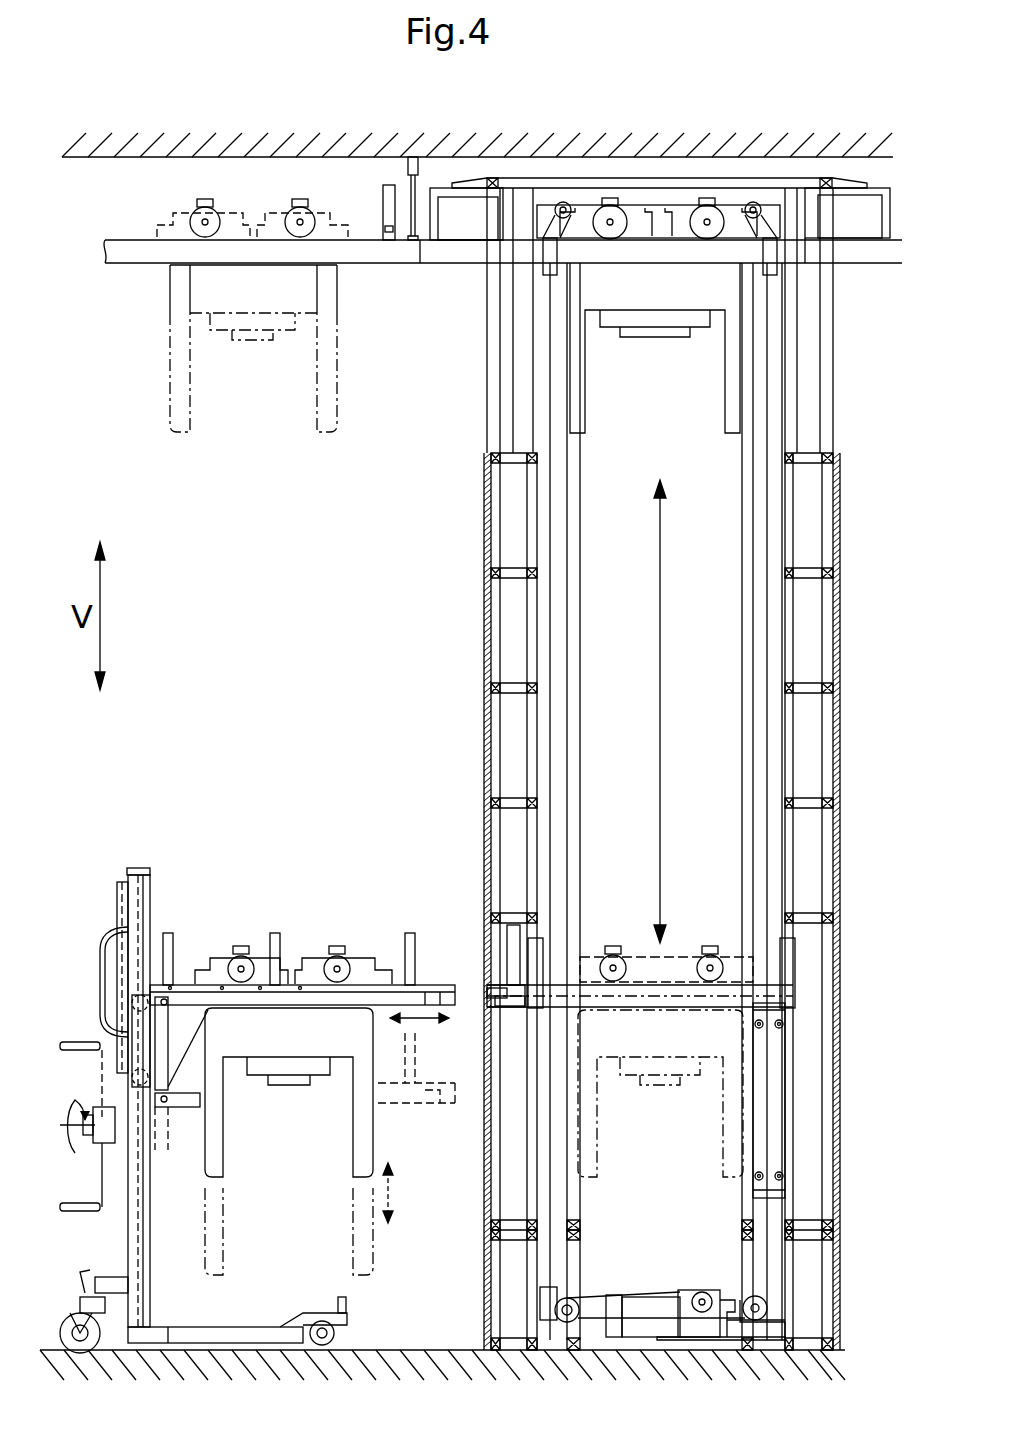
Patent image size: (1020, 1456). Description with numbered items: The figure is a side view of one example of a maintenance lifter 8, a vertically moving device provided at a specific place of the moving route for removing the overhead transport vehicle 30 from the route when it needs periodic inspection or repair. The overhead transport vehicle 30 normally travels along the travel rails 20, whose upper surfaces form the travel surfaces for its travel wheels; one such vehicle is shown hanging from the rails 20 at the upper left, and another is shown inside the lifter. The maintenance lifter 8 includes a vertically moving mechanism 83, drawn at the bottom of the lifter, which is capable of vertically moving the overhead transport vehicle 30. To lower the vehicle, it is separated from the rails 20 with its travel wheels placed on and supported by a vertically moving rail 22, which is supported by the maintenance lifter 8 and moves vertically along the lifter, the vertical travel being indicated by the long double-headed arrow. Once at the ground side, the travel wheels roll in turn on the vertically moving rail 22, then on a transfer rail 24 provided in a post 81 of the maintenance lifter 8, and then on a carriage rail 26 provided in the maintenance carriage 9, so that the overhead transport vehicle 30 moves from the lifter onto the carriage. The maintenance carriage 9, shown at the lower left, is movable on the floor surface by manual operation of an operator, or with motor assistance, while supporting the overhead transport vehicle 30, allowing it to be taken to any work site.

The maintenance lifter 8 is at (462, 588).
The maintenance carriage 9 is at (260, 866).
The travel rails 20 is at (127, 262).
The vertically moving rail 22 is at (620, 255).
The transfer rail 24 is at (515, 1005).
The carriage rail 26 is at (432, 962).
The overhead transport vehicle 30 is at (150, 375).
The post 81 is at (790, 1140).
The vertically moving mechanism 83 is at (678, 1272).